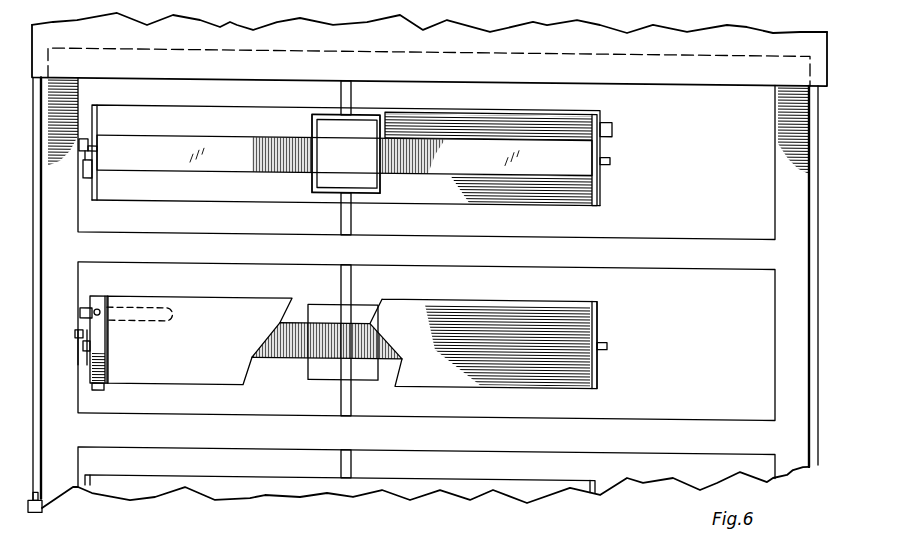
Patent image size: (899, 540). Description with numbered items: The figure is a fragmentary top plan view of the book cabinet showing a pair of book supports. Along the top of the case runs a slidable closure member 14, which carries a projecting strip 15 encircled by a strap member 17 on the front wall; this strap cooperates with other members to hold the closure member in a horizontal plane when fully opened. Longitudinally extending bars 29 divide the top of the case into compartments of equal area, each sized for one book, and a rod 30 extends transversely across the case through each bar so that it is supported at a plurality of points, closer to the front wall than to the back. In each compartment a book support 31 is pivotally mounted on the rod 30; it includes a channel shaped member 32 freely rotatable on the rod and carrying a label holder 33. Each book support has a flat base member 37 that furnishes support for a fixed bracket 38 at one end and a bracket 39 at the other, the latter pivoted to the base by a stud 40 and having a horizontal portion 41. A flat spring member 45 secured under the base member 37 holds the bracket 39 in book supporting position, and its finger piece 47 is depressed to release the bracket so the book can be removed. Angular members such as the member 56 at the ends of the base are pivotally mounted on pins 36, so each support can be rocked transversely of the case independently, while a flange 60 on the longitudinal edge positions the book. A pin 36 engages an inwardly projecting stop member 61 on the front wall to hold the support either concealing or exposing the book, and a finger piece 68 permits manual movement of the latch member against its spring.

The slidable closure member 14 is at (244, 33).
The strip 15 is at (35, 249).
The strap member 17 is at (34, 512).
The longitudinally extending bar 29 is at (688, 230).
The rod 30 is at (341, 91).
The book support 31 is at (213, 145).
The channel shaped member 32 is at (255, 140).
The label holder 33 is at (322, 172).
The pin 36 is at (611, 154).
The base member 37 is at (215, 194).
The bracket 38 is at (95, 117).
The bracket 39 is at (109, 347).
The stud 40 is at (102, 389).
The horizontal portion 41 is at (98, 296).
The flat spring member 45 is at (150, 304).
The finger piece 47 is at (613, 123).
The angular member 56 is at (604, 177).
The flange 60 is at (430, 382).
The stop member 61 is at (80, 149).
The finger piece 68 is at (84, 175).